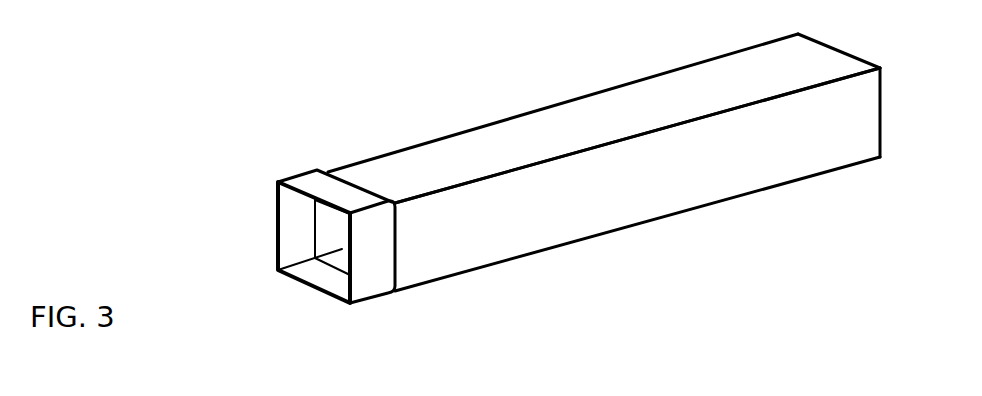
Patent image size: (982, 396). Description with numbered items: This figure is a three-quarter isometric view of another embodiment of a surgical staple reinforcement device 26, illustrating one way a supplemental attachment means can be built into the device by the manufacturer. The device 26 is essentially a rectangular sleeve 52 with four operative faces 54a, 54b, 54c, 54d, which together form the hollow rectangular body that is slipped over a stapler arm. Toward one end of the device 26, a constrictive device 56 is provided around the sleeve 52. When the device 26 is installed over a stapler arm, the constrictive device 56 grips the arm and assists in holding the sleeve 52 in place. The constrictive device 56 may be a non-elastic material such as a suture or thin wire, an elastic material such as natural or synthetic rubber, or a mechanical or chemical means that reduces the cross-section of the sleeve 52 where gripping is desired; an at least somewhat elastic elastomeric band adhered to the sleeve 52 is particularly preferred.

The surgical staple reinforcement device 26 is at (467, 127).
The rectangular sleeve 52 is at (755, 162).
The operative face 54a is at (415, 177).
The operative face 54b is at (528, 212).
The operative face 54c is at (333, 260).
The operative face 54d is at (333, 237).
The constrictive device 56 is at (353, 185).